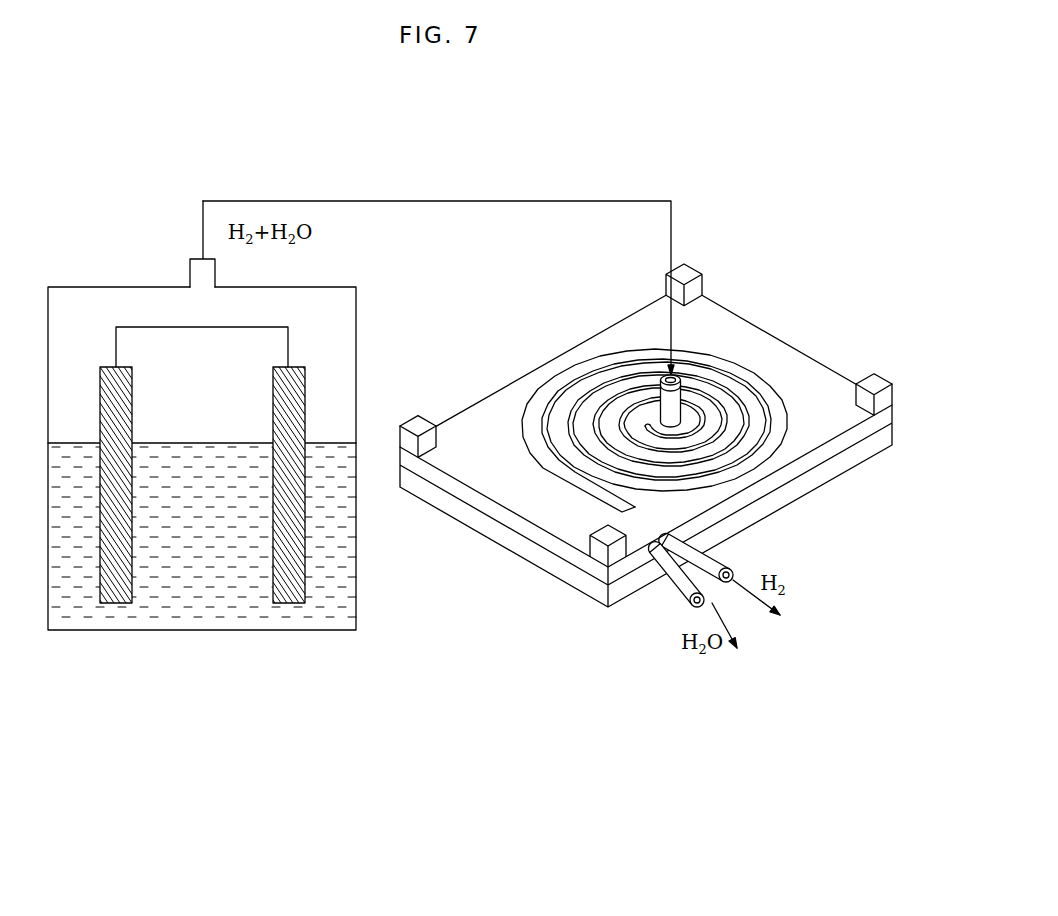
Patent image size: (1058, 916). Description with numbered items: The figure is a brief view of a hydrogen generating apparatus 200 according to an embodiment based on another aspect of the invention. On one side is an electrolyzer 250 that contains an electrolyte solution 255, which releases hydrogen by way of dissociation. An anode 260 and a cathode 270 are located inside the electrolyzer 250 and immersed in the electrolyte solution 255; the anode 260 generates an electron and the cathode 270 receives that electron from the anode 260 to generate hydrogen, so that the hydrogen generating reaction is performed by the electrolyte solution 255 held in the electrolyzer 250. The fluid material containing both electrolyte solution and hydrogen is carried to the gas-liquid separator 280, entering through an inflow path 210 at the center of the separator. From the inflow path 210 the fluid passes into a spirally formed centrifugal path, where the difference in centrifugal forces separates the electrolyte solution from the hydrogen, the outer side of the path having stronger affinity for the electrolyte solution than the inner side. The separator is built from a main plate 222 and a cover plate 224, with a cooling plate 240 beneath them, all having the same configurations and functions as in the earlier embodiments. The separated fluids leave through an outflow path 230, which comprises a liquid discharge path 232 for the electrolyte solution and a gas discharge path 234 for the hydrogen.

The hydrogen generating apparatus 200 is at (695, 152).
The inflow path 210 is at (688, 377).
The main plate 222 is at (553, 547).
The cover plate 224 is at (772, 403).
The outflow path 230 is at (709, 660).
The liquid discharge path 232 is at (678, 582).
The gas discharge path 234 is at (713, 575).
The cooling plate 240 is at (568, 577).
The electrolyzer 250 is at (353, 328).
The electrolyte solution 255 is at (350, 602).
The anode 260 is at (117, 603).
The cathode 270 is at (290, 603).
The gas-liquid separator 280 is at (437, 690).